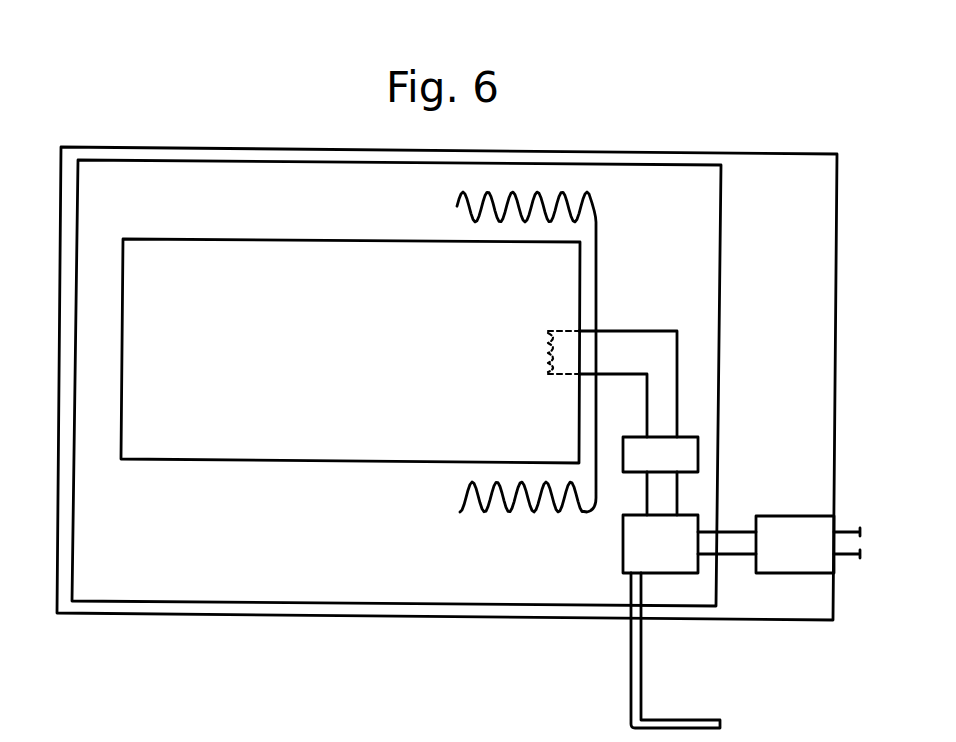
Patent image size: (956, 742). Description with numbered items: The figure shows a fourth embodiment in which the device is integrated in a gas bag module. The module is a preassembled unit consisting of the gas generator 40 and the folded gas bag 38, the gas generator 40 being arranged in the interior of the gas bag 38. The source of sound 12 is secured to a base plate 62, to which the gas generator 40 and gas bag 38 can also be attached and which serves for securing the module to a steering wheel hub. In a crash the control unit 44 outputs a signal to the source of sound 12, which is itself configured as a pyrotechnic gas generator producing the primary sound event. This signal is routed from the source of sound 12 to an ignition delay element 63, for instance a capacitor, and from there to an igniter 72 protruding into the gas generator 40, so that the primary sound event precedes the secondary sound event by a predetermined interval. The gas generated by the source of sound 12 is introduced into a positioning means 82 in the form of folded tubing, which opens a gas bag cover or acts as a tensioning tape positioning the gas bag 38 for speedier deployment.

The base plate 62 is at (384, 581).
The gas generator 40 is at (290, 437).
The gas bag 38 is at (511, 511).
The igniter 72 is at (544, 363).
The ignition delay element 63 is at (685, 451).
The source of sound 12 is at (633, 543).
The control unit 44 is at (802, 529).
The positioning means 82 is at (688, 687).